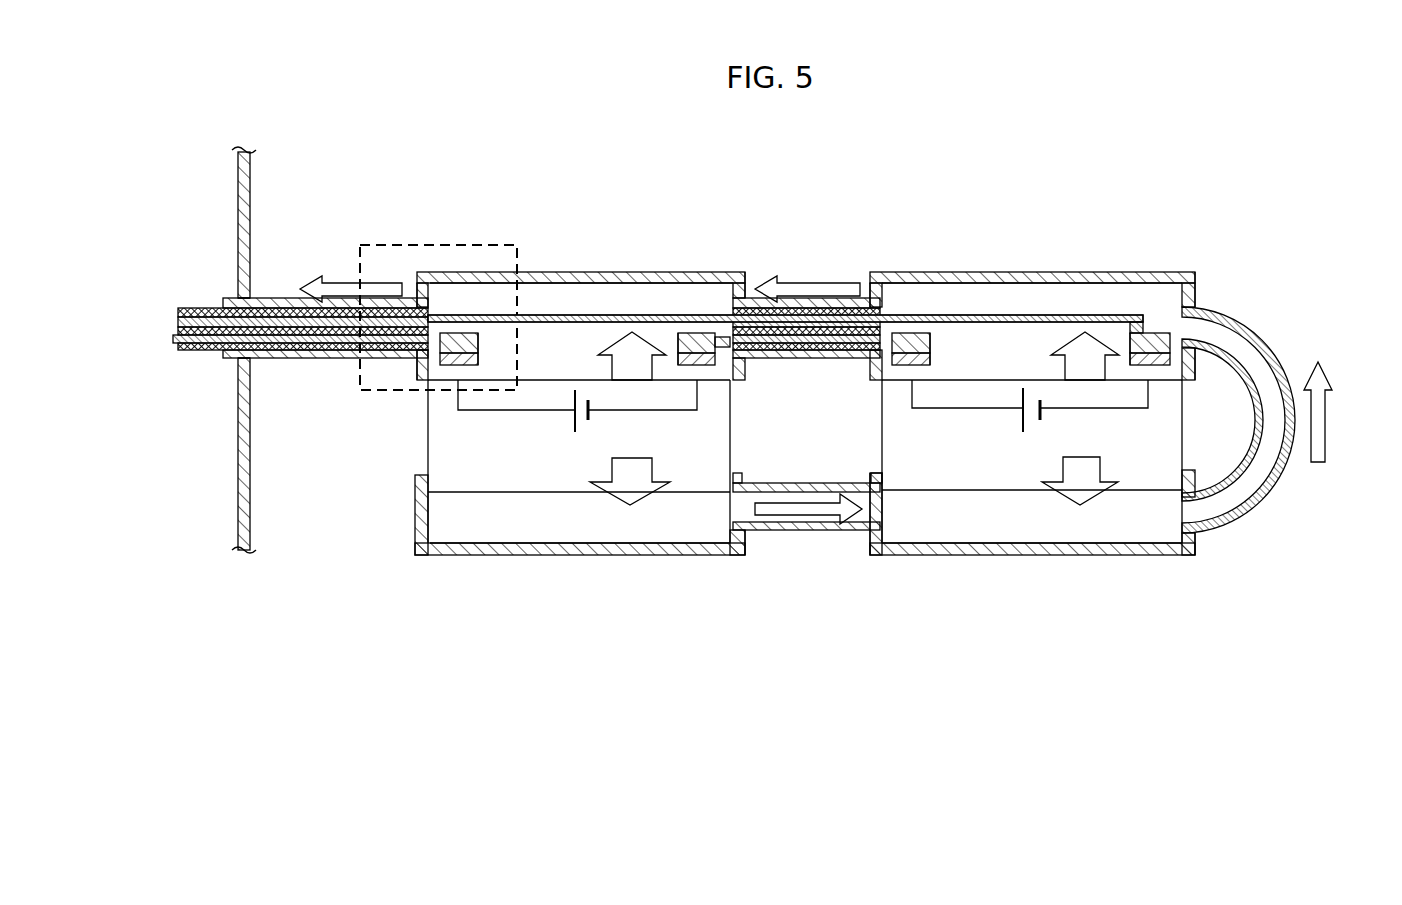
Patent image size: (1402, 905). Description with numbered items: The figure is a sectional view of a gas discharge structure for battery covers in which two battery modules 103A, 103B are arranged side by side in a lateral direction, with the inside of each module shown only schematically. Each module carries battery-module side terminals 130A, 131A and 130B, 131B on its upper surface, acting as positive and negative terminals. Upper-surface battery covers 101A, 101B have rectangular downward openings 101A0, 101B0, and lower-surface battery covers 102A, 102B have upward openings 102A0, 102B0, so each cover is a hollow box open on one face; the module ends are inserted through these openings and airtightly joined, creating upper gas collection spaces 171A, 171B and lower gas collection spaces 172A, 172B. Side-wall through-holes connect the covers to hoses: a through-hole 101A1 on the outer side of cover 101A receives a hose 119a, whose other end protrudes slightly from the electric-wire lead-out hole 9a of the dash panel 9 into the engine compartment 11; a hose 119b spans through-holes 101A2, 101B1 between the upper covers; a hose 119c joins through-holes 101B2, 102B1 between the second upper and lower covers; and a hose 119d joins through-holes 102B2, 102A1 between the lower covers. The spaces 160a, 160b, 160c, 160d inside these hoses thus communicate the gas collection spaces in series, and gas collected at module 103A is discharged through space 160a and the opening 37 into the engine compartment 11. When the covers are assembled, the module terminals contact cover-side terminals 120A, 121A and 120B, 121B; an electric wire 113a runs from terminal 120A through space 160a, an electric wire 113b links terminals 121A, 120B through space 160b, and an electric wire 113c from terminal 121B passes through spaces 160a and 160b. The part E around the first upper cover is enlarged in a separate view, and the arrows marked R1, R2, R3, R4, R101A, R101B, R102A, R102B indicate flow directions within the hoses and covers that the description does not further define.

The dash panel 9 is at (238, 478).
The electric-wire lead-out hole 9a is at (232, 360).
The engine compartment 11 is at (108, 182).
The opening 37 is at (223, 300).
The electric wire 113a is at (176, 345).
The electric wire 113b is at (836, 358).
The electric wire 113c is at (180, 313).
The hose 119a is at (282, 358).
The hose 119b is at (775, 358).
The hose 119c is at (1265, 337).
The hose 119d is at (830, 530).
The cover-side terminal 120A is at (470, 333).
The cover-side terminal 120B is at (915, 333).
The cover-side terminal 121A is at (700, 333).
The cover-side terminal 121B is at (1150, 333).
The battery-module side terminal 130A is at (482, 350).
The battery-module side terminal 130B is at (930, 350).
The battery-module side terminal 131A is at (705, 365).
The battery-module side terminal 131B is at (1162, 365).
The space 160a is at (289, 298).
The space 160b is at (855, 298).
The space 160c is at (1285, 476).
The space 160d is at (850, 493).
The gas collection space 171A is at (593, 272).
The gas collection space 171B is at (1025, 272).
The gas collection space 172A is at (545, 548).
The gas collection space 172B is at (1011, 548).
The upper-surface battery cover 101A is at (690, 272).
The opening 101A0 is at (430, 372).
The through-hole 101A1 is at (437, 300).
The through-hole 101A2 is at (745, 280).
The upper-surface battery cover 101B is at (1068, 272).
The opening 101B0 is at (1187, 373).
The through-hole 101B1 is at (882, 300).
The through-hole 101B2 is at (1196, 310).
The lower-surface battery cover 102A is at (655, 548).
The opening 102A0 is at (430, 490).
The through-hole 102A1 is at (738, 546).
The lower-surface battery cover 102B is at (1120, 548).
The opening 102B0 is at (1185, 490).
The through-hole 102B1 is at (1200, 528).
The through-hole 102B2 is at (885, 550).
The battery module 103A is at (530, 467).
The battery module 103B is at (929, 465).
The part E is at (400, 243).
The flow direction in first tube R1 is at (351, 278).
The flow direction in second tube R2 is at (807, 278).
The flow direction in curved tube R3 is at (1334, 412).
The flow direction in return tube R4 is at (796, 522).
The heat flow direction in A upper housing R101A is at (633, 345).
The heat flow direction in B upper housing R101B is at (1085, 345).
The heat flow direction in A lower housing R102A is at (632, 468).
The heat flow direction in B lower housing R102B is at (1083, 466).